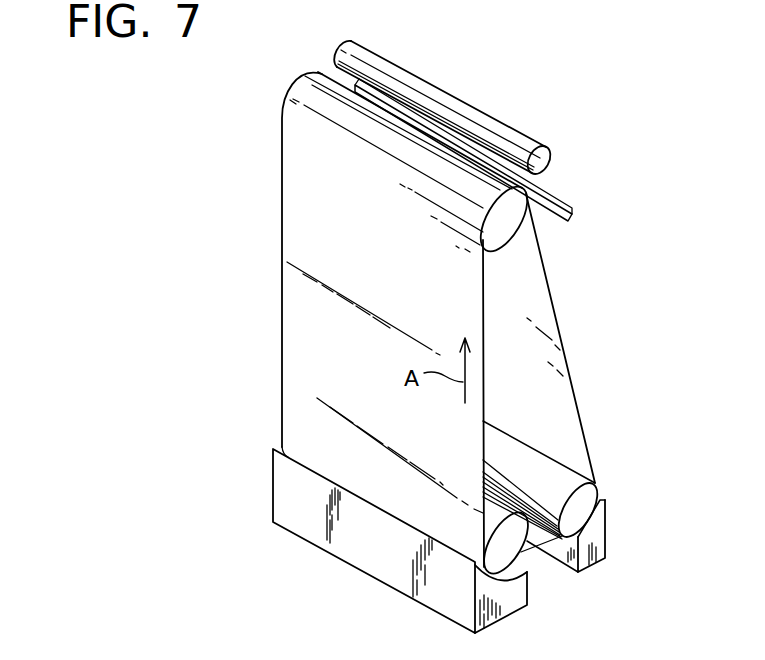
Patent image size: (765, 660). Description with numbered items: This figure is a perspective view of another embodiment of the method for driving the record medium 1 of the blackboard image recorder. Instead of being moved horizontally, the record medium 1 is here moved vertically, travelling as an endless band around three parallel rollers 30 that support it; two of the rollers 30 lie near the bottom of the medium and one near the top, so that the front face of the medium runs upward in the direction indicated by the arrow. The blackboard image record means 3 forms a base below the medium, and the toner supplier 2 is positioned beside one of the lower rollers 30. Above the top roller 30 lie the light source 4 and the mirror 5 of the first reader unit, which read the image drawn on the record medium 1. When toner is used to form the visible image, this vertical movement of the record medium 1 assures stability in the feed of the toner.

The record medium 1 is at (289, 238).
The toner supplier 2 is at (596, 533).
The blackboard image record means 3 is at (500, 603).
The light source 4 is at (508, 133).
The mirror 5 is at (558, 207).
The rollers 30 is at (508, 227).